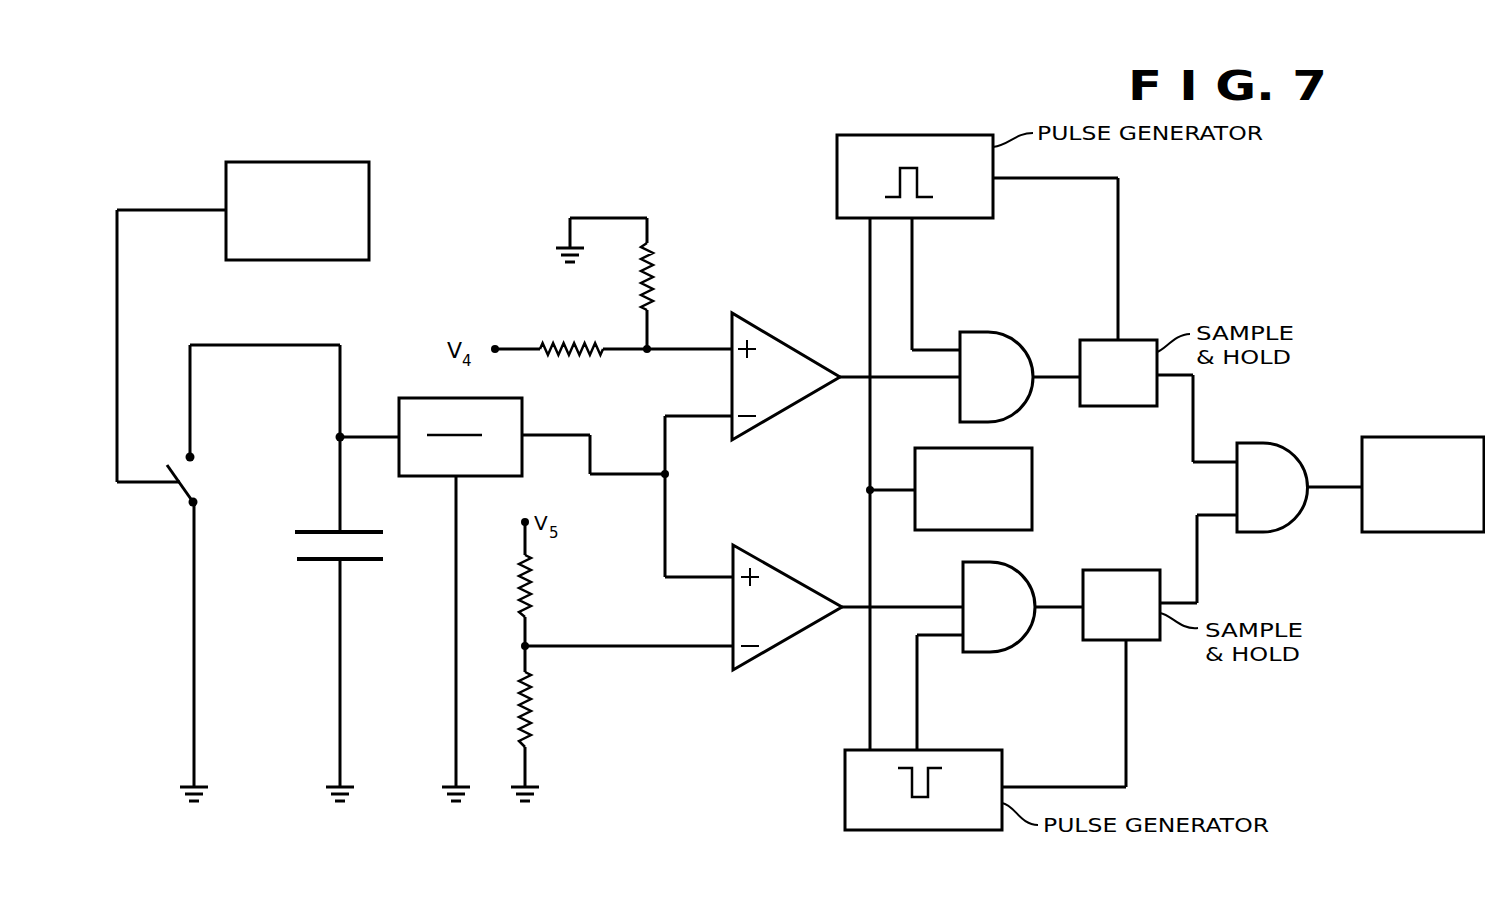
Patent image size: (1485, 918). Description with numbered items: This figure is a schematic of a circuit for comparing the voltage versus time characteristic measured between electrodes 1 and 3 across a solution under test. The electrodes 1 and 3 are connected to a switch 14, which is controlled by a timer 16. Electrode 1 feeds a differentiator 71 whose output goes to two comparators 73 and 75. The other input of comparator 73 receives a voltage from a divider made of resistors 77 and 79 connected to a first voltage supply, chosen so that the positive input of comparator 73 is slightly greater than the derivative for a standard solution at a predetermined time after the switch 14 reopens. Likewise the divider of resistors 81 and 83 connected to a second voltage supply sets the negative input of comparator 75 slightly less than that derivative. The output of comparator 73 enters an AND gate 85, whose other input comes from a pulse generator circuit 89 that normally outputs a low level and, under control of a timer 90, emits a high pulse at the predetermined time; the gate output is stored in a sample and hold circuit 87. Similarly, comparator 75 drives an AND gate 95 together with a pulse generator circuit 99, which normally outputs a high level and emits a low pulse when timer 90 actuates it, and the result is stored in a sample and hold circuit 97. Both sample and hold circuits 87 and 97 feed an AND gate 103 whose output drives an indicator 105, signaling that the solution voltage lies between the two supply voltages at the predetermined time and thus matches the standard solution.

The electrode 1 is at (322, 530).
The electrode 3 is at (312, 561).
The switch 14 is at (182, 490).
The timer 16 is at (302, 162).
The differentiator 71 is at (522, 418).
The comparator 73 is at (803, 348).
The comparator 75 is at (798, 577).
The resistor 77 is at (648, 283).
The resistor 79 is at (567, 347).
The resistor 81 is at (532, 702).
The resistor 83 is at (530, 583).
The AND gate 85 is at (1005, 332).
The sample and hold circuit 87 is at (1143, 340).
The pulse generator circuit 89 is at (838, 163).
The timer 90 is at (1032, 508).
The AND gate 95 is at (1020, 644).
The sample and hold circuit 97 is at (1147, 643).
The pulse generator circuit 99 is at (957, 832).
The AND gate 103 is at (1262, 443).
The indicator 105 is at (1395, 437).